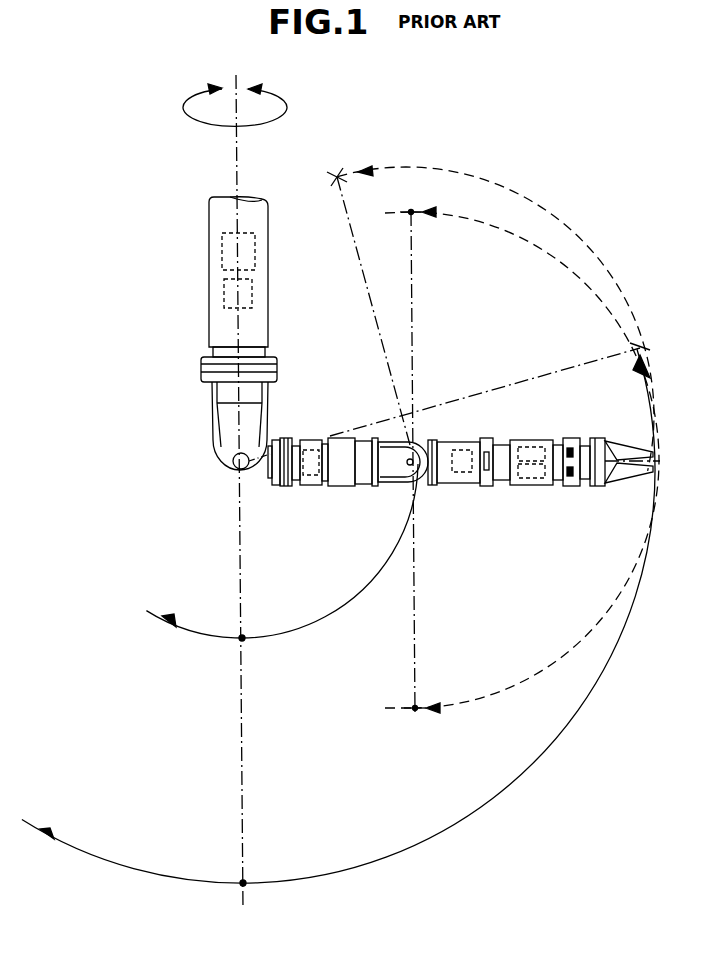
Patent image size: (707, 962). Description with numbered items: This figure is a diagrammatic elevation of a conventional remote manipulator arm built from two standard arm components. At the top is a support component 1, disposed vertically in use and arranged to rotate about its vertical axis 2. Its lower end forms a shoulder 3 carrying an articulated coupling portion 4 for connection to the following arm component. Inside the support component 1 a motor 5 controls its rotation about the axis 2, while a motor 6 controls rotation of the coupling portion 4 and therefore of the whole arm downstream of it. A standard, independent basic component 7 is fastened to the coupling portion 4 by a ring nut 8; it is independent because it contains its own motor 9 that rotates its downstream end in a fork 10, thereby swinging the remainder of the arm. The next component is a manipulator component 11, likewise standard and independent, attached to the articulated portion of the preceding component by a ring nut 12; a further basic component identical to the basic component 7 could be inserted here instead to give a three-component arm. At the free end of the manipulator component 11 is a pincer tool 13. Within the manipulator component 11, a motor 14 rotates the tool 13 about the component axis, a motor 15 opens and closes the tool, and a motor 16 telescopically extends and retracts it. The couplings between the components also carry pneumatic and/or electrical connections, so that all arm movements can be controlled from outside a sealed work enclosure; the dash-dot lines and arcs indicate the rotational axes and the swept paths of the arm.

The support component 1 is at (204, 328).
The axis 2 is at (236, 130).
The shoulder 3 is at (229, 470).
The articulated coupling portion 4 is at (276, 486).
The motor 5 is at (221, 252).
The motor 6 is at (223, 291).
The basic component 7 is at (345, 490).
The ring nut 8 is at (286, 438).
The motor 9 is at (311, 486).
The fork 10 is at (398, 466).
The manipulator component 11 is at (508, 490).
The ring nut 12 is at (436, 442).
The pincer tool 13 is at (632, 472).
The motor 14 is at (460, 485).
The motor 15 is at (533, 440).
The motor 16 is at (531, 486).